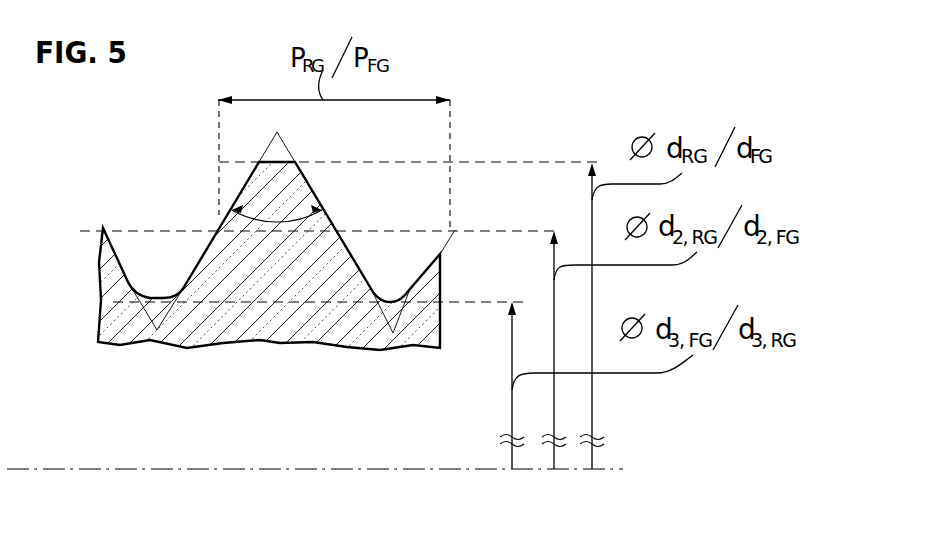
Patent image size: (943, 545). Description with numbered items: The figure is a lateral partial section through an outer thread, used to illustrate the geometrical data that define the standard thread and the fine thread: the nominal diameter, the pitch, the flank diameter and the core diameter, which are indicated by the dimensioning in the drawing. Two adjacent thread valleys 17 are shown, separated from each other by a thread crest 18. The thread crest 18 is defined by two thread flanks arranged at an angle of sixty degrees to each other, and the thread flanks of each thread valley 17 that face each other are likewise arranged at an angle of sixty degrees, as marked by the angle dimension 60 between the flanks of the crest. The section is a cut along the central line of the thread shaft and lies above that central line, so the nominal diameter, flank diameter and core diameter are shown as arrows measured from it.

The thread valley 17 is at (163, 288).
The thread crest 18 is at (217, 263).
The flank angle 60 is at (277, 209).